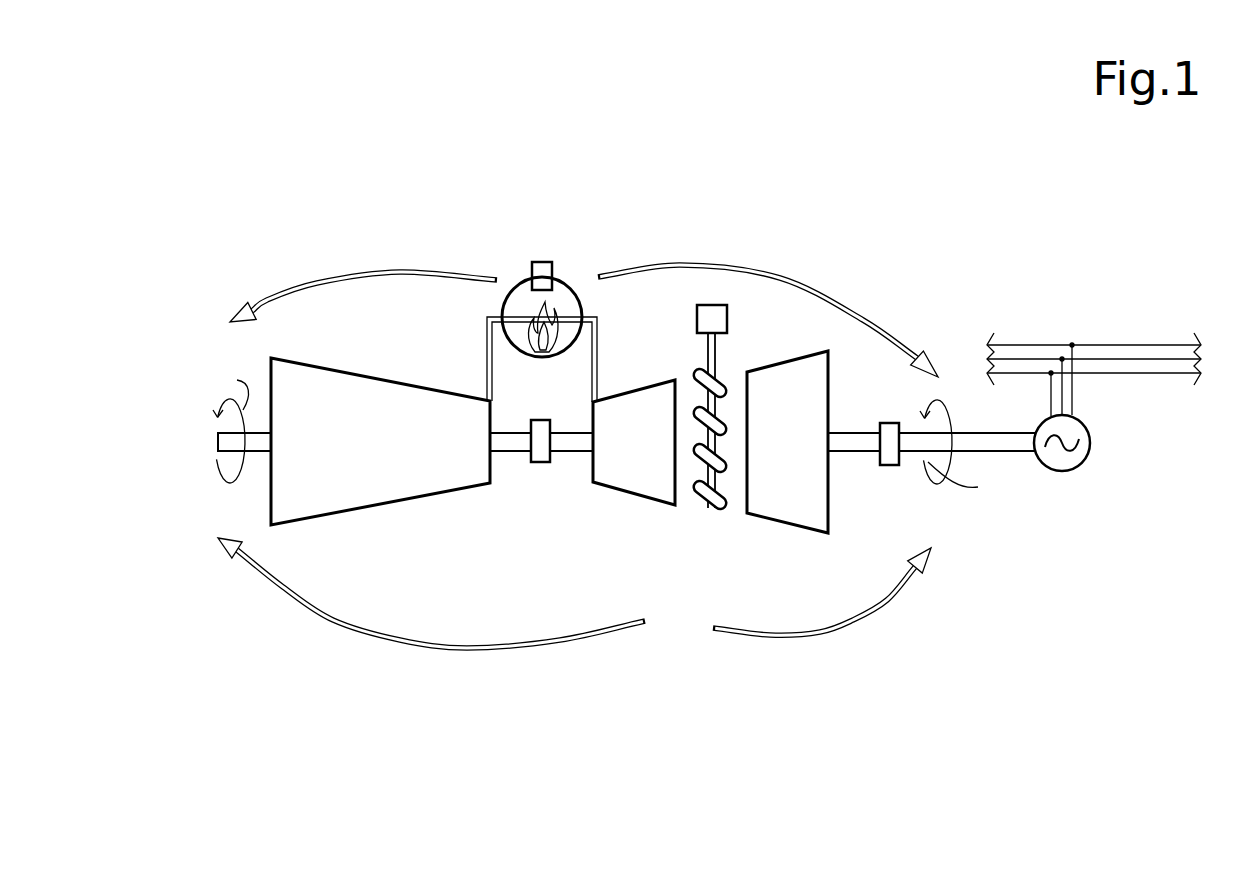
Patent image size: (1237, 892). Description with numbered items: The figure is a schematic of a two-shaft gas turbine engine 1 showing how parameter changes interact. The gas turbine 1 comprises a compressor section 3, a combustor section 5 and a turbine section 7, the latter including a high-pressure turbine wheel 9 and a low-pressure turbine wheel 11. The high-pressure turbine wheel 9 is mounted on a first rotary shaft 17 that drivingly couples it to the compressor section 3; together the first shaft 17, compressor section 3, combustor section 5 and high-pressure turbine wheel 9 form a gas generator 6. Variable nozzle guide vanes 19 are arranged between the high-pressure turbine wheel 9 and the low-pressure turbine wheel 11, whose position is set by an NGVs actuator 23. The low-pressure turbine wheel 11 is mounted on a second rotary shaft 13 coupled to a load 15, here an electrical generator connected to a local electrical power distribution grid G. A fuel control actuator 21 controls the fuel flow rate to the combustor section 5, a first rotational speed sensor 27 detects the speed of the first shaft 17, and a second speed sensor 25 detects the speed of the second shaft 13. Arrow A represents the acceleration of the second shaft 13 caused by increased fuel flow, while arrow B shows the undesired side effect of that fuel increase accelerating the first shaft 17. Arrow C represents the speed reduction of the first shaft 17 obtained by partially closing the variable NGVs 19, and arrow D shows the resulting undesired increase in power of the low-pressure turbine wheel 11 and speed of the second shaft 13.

The two-shaft gas turbine engine 1 is at (553, 575).
The compressor section 3 is at (376, 405).
The combustor section 5 is at (490, 250).
The gas generator 6 is at (663, 550).
The turbine section 7 is at (850, 573).
The high-pressure turbine wheel 9 is at (640, 408).
The low-pressure turbine wheel 11 is at (796, 380).
The second rotary shaft 13 is at (852, 437).
The load 15 is at (1090, 436).
The first rotary shaft 17 is at (574, 433).
The variable nozzle guide vanes 19 is at (688, 371).
The fuel control actuator 21 is at (552, 273).
The NGVs actuator 23 is at (727, 320).
The second speed sensor 25 is at (890, 466).
The first rotational speed sensor 27 is at (538, 463).
The arrow A is at (797, 278).
The arrow B is at (337, 278).
The arrow C is at (337, 628).
The arrow D is at (822, 634).
The local electrical power distribution grid G is at (1085, 337).